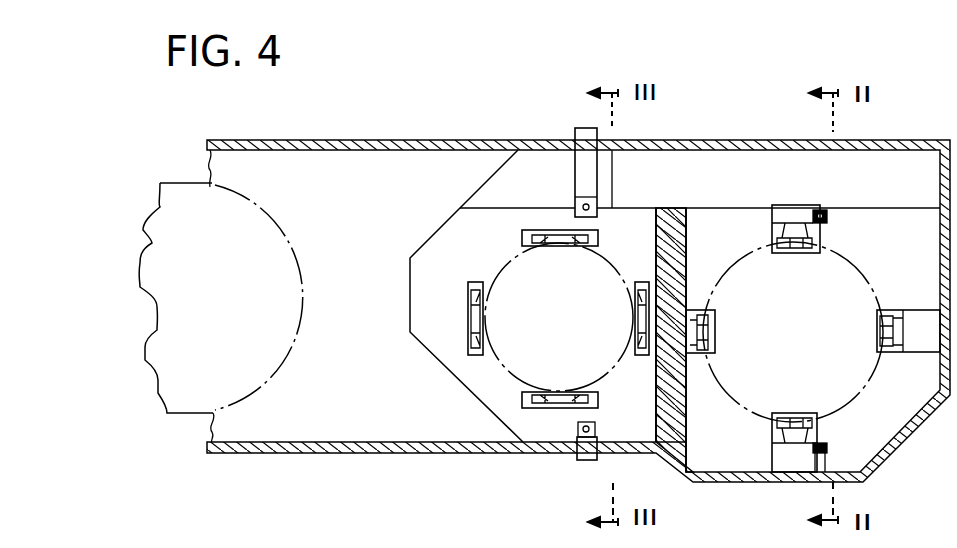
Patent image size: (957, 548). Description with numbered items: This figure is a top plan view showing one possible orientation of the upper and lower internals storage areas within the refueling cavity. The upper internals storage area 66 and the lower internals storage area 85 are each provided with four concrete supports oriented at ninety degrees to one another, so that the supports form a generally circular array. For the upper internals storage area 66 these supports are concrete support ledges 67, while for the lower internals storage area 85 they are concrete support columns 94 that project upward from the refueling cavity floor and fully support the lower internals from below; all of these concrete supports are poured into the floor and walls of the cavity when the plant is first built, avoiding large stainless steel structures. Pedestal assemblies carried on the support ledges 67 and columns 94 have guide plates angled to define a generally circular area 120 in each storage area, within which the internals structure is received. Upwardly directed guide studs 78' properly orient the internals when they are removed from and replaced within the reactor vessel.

The upper internals storage area 66 is at (879, 249).
The concrete support ledge 67 is at (919, 315).
The guide stud 78' is at (720, 300).
The lower internals storage area 85 is at (638, 251).
The concrete support column 94 is at (471, 281).
The generally circular area 120 is at (512, 257).